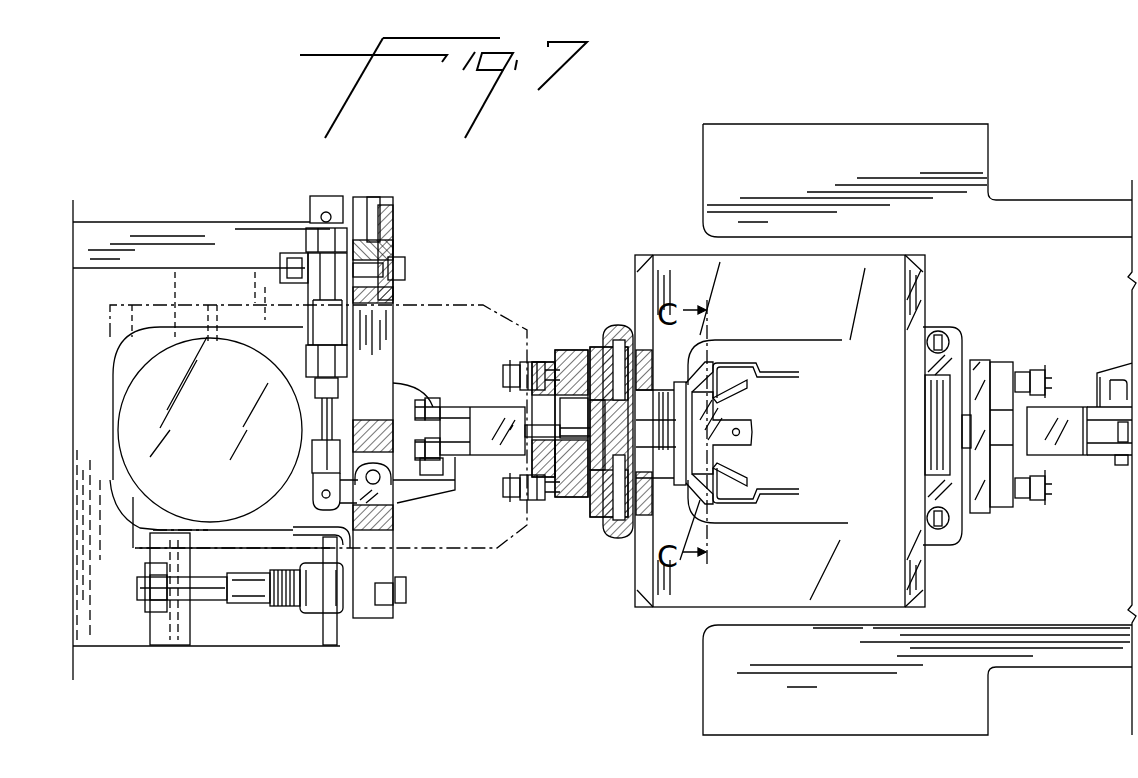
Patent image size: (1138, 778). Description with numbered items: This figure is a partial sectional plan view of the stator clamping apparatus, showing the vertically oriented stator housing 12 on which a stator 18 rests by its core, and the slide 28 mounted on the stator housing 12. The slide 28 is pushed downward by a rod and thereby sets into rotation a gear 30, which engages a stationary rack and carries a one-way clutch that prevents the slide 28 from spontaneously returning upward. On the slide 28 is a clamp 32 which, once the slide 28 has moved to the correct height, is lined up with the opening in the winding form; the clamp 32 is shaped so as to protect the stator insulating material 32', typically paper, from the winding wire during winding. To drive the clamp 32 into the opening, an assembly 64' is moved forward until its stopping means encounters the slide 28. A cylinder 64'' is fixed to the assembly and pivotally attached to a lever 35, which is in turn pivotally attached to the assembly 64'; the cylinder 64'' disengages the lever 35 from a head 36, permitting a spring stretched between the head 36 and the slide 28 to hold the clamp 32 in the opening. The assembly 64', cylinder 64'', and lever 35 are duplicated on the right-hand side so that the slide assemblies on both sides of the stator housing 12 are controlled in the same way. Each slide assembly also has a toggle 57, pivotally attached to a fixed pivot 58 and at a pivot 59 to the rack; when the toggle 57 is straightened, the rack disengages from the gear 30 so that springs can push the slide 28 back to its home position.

The stator housing 12 is at (655, 608).
The stator 18 is at (808, 345).
The slide 28 is at (943, 340).
The gear 30 is at (578, 375).
The clamp 32 is at (757, 433).
The stator insulating material 32' is at (796, 433).
The lever 35 is at (440, 492).
The head 36 is at (440, 470).
The toggle 57 is at (510, 405).
The fixed pivot 58 is at (548, 502).
The pivot to rack 59 is at (545, 372).
The assembly 64' is at (393, 407).
The cylinder 64'' is at (286, 353).